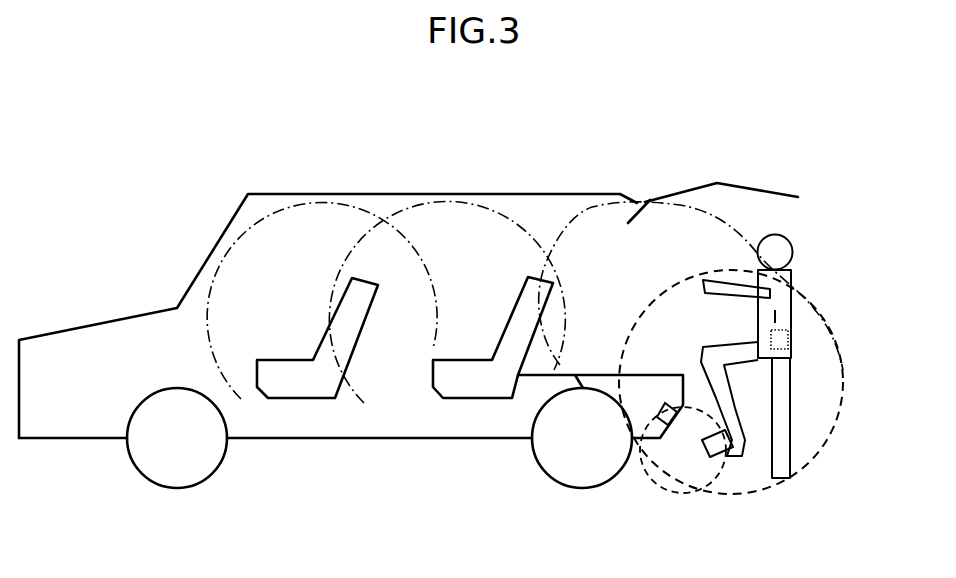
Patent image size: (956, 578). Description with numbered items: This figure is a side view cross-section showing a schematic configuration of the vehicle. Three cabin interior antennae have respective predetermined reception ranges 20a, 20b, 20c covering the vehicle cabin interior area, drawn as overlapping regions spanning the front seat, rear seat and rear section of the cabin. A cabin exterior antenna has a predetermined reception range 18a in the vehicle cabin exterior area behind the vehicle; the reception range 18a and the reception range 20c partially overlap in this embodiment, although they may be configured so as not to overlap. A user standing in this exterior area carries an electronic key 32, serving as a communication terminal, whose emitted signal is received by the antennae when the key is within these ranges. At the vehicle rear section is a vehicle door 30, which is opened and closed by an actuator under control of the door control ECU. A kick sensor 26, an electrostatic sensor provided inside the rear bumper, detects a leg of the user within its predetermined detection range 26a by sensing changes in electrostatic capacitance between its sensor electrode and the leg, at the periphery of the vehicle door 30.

The reception range 18a is at (822, 303).
The reception range 20a is at (302, 208).
The reception range 20b is at (442, 208).
The reception range 20c is at (650, 190).
The kick sensor 26 is at (665, 430).
The detection range 26a is at (681, 492).
The vehicle door 30 is at (757, 182).
The electronic key 32 is at (790, 333).